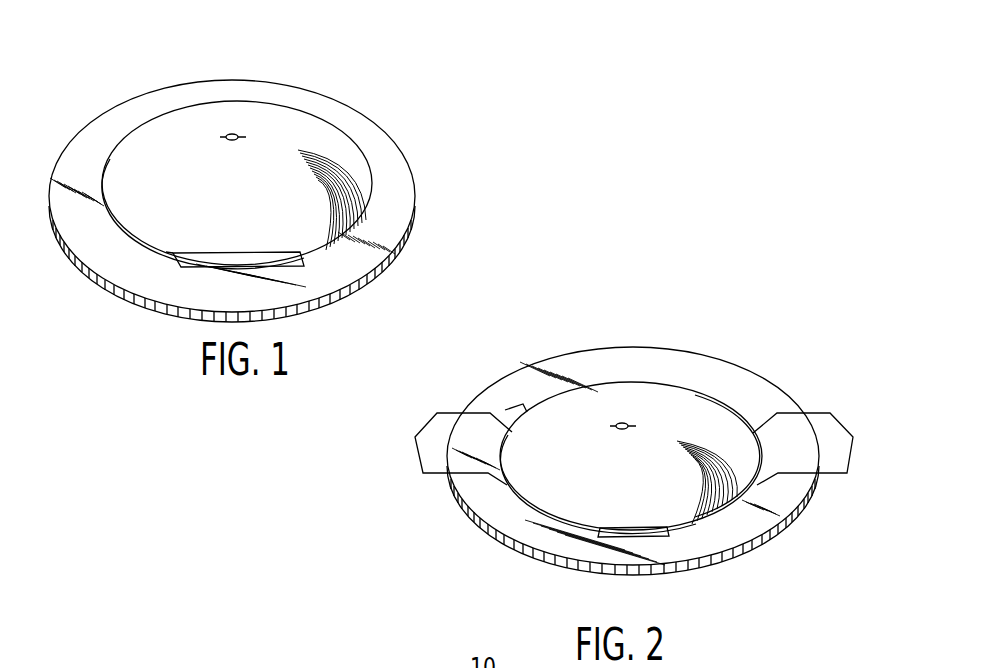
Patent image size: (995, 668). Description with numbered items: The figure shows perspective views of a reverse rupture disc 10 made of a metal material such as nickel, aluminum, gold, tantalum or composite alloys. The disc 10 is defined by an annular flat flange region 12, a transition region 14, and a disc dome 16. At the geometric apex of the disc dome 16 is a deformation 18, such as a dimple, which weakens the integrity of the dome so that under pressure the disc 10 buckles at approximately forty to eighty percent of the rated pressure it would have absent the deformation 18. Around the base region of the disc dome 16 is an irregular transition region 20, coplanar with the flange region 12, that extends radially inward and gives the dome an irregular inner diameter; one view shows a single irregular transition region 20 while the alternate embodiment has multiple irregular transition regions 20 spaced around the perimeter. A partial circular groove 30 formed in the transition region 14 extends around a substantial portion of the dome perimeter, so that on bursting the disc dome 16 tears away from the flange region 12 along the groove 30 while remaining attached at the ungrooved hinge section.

In FIG. 1, the reverse rupture disc 10 is at (345, 74).
In FIG. 2, the reverse rupture disc 10 is at (700, 302).
In FIG. 1, the annular flat flange region 12 is at (382, 228).
In FIG. 2, the annular flat flange region 12 is at (740, 528).
In FIG. 1, the transition region 14 is at (365, 177).
In FIG. 2, the transition region 14 is at (678, 385).
In FIG. 1, the disc dome 16 is at (328, 138).
In FIG. 2, the disc dome 16 is at (712, 430).
In FIG. 1, the deformation 18 is at (229, 133).
In FIG. 2, the deformation 18 is at (618, 422).
In FIG. 1, the irregular transition region 20 is at (310, 270).
In FIG. 2, the irregular transition region 20 is at (415, 437).
In FIG. 1, the partial circular groove 30 is at (180, 265).
In FIG. 2, the partial circular groove 30 is at (523, 415).